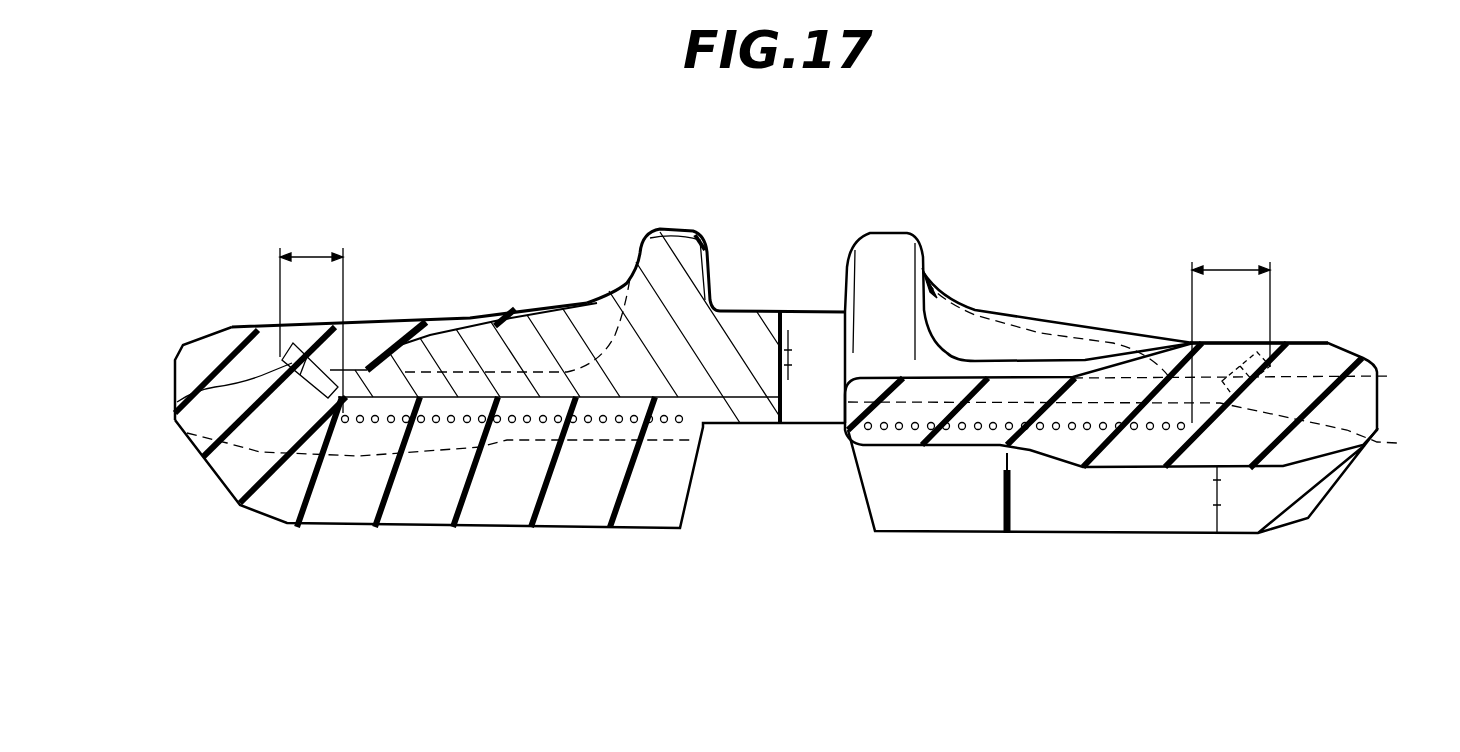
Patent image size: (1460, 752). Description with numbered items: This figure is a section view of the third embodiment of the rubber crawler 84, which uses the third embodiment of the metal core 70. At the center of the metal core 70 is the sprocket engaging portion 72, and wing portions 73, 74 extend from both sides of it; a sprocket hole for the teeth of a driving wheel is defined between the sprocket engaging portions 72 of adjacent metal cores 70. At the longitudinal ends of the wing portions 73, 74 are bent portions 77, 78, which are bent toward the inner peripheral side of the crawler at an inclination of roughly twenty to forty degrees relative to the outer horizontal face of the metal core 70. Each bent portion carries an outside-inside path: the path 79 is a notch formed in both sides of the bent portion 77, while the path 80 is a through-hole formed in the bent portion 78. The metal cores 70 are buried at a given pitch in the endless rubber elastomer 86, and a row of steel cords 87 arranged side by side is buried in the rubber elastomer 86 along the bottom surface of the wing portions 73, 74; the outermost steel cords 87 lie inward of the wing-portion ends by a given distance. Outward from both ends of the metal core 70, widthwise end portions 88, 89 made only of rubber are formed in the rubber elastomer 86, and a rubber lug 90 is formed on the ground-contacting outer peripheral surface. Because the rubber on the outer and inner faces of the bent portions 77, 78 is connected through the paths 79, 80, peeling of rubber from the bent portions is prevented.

The metal core 70 is at (900, 232).
The sprocket engaging portion 72 is at (768, 310).
The wing portion 73 is at (1033, 385).
The wing portion 74 is at (442, 387).
The bent portion 77 is at (1261, 373).
The bent portion 78 is at (177, 402).
The outside-inside path (notch portion) 79 is at (1145, 432).
The outside-inside path (through-hole) 80 is at (293, 367).
The rubber crawler 84 is at (1047, 317).
The rubber elastomer 86 is at (475, 315).
The steel cord 87 is at (567, 420).
The widthwise end portion 88 is at (1318, 345).
The widthwise end portion 89 is at (212, 348).
The rubber lug 90 is at (663, 513).